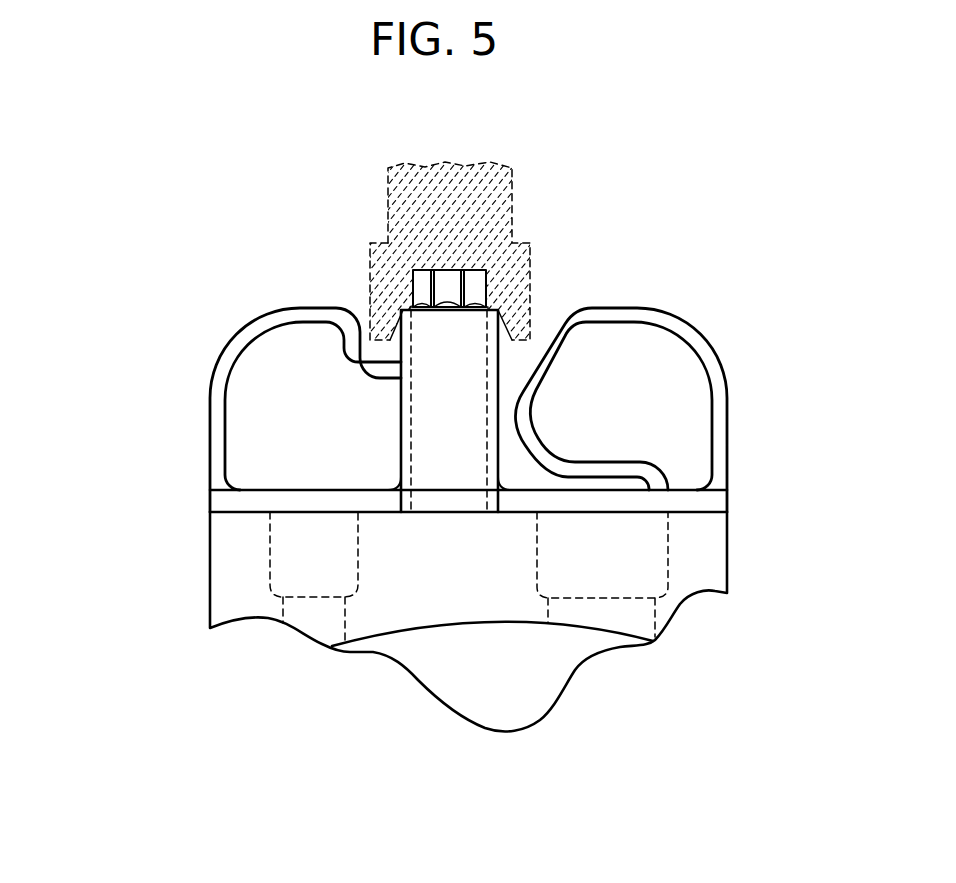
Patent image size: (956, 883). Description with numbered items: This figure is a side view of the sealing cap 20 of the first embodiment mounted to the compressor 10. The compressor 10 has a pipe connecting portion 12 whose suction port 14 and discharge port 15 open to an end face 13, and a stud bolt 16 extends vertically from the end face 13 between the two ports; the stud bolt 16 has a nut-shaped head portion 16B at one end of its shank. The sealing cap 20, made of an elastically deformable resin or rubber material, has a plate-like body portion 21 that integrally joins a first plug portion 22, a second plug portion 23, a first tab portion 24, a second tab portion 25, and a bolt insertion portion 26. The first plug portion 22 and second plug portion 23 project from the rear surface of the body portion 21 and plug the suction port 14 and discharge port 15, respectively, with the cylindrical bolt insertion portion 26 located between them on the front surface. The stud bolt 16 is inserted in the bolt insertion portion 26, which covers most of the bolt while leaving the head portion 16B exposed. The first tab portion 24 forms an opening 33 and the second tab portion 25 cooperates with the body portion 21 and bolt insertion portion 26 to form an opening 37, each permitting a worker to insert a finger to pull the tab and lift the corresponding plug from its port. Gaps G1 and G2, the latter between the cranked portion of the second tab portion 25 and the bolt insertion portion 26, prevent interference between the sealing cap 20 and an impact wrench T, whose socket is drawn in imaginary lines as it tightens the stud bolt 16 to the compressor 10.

The compressor 10 is at (122, 540).
The pipe connecting portion 12 is at (210, 590).
The end face 13 is at (252, 512).
The suction port 14 is at (660, 545).
The discharge port 15 is at (265, 553).
The stud bolt 16 is at (447, 264).
The head portion 16B is at (420, 291).
The sealing cap 20 is at (266, 268).
The body portion 21 is at (295, 490).
The first plug portion 22 is at (537, 563).
The second plug portion 23 is at (358, 565).
The first tab portion 24 is at (730, 385).
The second tab portion 25 is at (240, 337).
The bolt insertion portion 26 is at (401, 428).
The opening 33 is at (625, 421).
The opening 37 is at (273, 424).
The gap G1 is at (507, 367).
The gap G2 is at (385, 350).
The impact wrench T is at (527, 207).